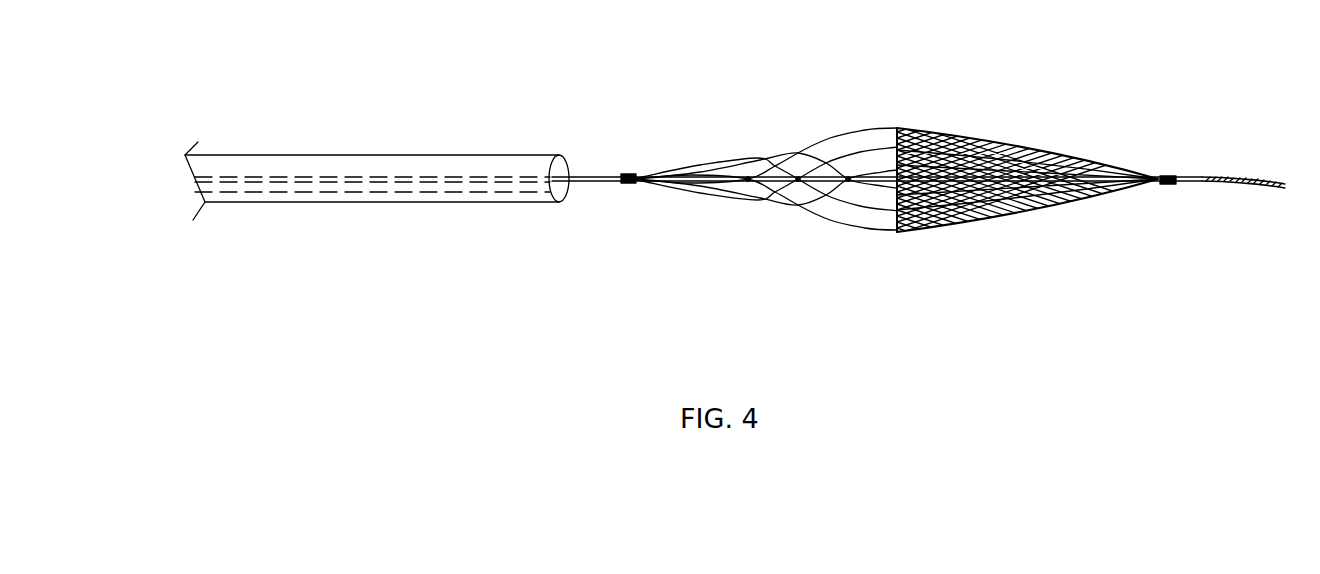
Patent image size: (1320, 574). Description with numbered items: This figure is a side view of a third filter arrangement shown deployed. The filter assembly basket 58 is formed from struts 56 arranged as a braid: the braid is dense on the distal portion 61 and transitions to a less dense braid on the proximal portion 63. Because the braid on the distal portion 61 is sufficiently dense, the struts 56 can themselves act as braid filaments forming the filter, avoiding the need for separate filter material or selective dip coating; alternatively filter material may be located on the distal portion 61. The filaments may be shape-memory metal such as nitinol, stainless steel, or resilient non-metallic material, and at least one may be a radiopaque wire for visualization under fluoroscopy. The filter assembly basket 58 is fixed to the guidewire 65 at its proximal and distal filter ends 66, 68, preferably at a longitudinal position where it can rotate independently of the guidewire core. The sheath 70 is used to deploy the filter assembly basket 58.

The sheath 70 is at (373, 155).
The guidewire 65 is at (587, 182).
The proximal filter end 66 is at (633, 184).
The filter assembly basket 58 is at (872, 102).
The proximal portion 63 is at (793, 228).
The struts 56 is at (716, 162).
The distal portion 61 is at (1012, 227).
The distal filter end 68 is at (1168, 184).